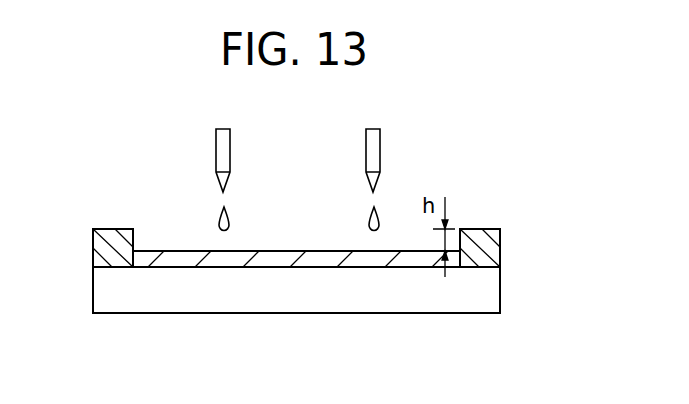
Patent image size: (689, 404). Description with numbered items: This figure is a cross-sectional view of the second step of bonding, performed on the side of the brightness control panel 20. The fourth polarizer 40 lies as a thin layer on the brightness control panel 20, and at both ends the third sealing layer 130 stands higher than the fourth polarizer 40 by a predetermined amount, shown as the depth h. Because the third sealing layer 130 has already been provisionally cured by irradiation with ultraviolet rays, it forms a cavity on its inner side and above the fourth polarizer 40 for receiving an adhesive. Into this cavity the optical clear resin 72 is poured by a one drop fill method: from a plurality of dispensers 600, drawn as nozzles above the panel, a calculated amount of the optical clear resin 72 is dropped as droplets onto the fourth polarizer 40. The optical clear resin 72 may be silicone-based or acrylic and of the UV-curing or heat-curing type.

The brightness control panel 20 is at (482, 292).
The fourth polarizer 40 is at (302, 252).
The third sealing layer 130 is at (487, 247).
The dispensers 600 is at (380, 155).
The optical clear resin (OCR) 72 is at (368, 220).